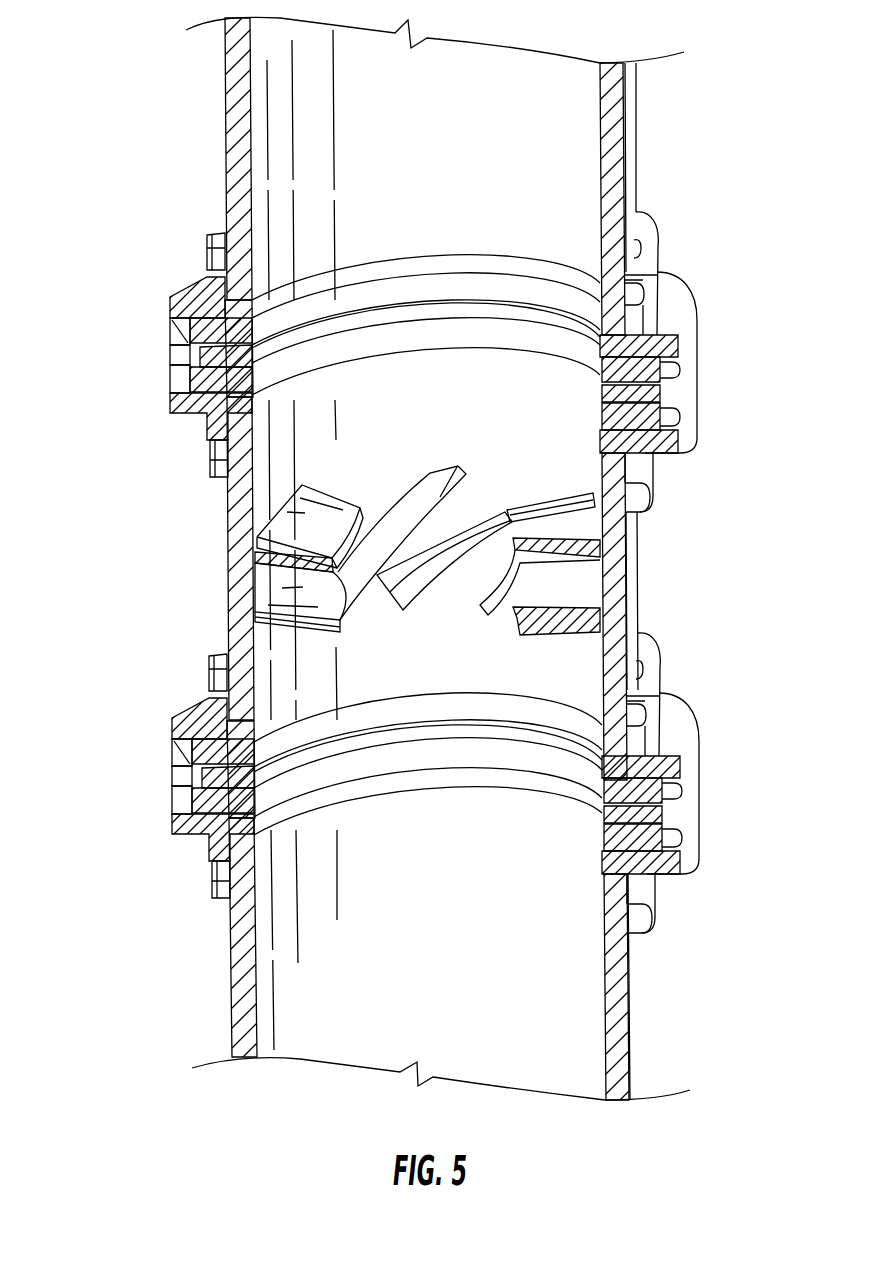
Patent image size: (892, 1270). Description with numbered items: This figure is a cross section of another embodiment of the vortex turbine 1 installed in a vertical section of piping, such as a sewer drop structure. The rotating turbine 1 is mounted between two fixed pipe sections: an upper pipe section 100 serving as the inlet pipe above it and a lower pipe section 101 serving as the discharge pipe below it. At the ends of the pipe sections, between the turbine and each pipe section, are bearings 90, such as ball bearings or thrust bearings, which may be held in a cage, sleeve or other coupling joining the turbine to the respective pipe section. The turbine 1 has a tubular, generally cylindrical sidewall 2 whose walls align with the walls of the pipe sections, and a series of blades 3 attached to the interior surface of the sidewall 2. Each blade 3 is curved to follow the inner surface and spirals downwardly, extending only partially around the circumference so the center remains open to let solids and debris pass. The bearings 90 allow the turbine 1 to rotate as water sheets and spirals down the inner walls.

The turbine 1 is at (157, 534).
The sidewall 2 is at (638, 598).
The blades 3 is at (573, 645).
The bearings 90 is at (700, 358).
The upper pipe section 100 is at (636, 170).
The lower pipe section 101 is at (630, 1037).